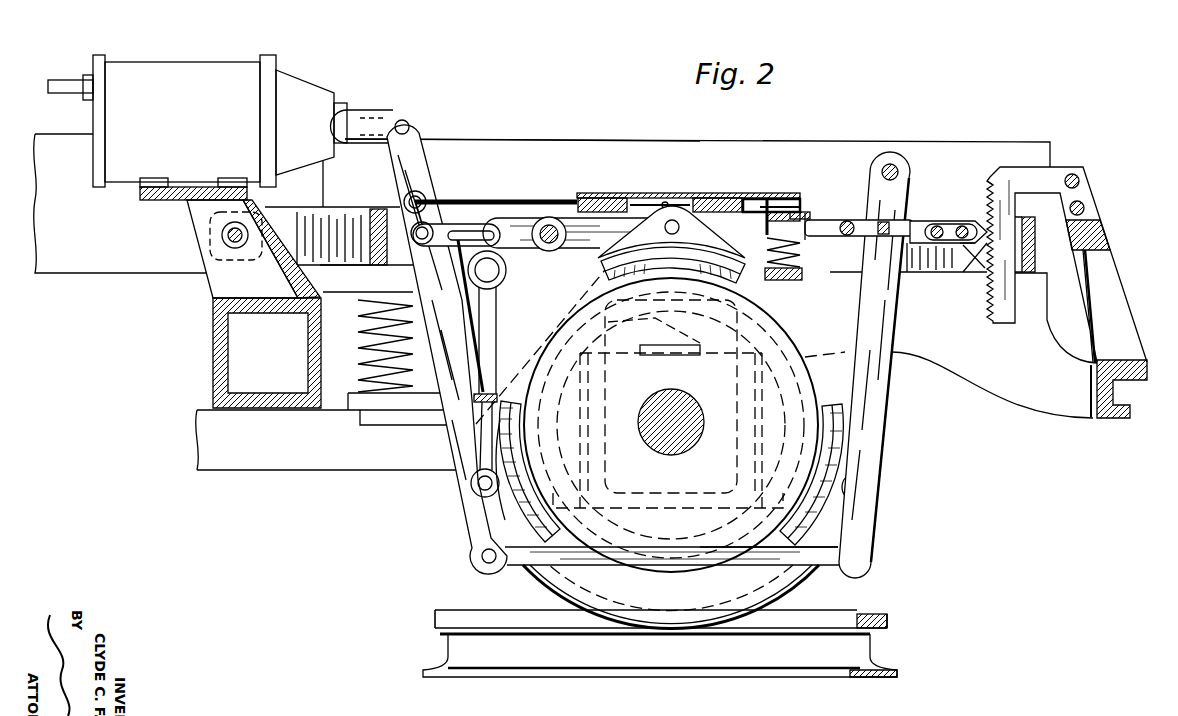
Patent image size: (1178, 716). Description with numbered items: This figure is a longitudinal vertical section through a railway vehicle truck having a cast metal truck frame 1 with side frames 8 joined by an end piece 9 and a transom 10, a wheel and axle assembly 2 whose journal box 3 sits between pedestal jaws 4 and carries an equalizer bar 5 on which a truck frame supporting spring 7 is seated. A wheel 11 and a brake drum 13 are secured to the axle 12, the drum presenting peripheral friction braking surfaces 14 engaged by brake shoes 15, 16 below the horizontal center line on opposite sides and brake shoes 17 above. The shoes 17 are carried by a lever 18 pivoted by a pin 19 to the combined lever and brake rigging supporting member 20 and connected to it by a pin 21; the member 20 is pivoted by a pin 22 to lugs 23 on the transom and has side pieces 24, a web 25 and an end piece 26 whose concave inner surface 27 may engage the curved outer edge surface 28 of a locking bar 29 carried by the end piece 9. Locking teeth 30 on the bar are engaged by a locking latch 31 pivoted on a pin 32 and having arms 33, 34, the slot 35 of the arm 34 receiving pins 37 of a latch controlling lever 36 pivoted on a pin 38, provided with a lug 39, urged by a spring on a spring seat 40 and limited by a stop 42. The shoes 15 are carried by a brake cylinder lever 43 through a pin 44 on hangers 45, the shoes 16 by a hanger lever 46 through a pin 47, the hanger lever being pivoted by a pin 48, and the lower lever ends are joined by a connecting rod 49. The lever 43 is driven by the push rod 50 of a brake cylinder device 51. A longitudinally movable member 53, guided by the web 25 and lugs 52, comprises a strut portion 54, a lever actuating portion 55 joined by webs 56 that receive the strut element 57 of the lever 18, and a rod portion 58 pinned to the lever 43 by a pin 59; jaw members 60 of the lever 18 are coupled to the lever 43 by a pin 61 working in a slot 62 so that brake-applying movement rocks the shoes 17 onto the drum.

The truck frame 1 is at (502, 142).
The wheel and axle assembly 2 is at (563, 563).
The axle journal box 3 is at (727, 362).
The pedestal jaws 4 is at (677, 460).
The equalizer bar 5 is at (312, 463).
The truck frame supporting spring 7 is at (363, 360).
The side frame 8 is at (630, 143).
The end piece 9 is at (1108, 418).
The transom 10 is at (215, 350).
The wheel 11 is at (797, 573).
The axle 12 is at (690, 397).
The brake drum 13 is at (675, 560).
The peripheral friction braking surface 14 is at (560, 327).
The brake shoe 15 is at (530, 497).
The brake shoe 16 is at (838, 448).
The brake shoe 17 is at (600, 277).
The lever 18 is at (523, 230).
The pin 19 is at (552, 221).
The combined lever and brake rigging supporting member 20 is at (342, 217).
The pin 21 is at (675, 223).
The pin 22 is at (222, 233).
The lugs 23 is at (222, 283).
The side pieces 24 is at (397, 262).
The web 25 is at (793, 210).
The end piece 26 is at (1035, 247).
The concave inner surface 27 is at (1070, 222).
The curved outer edge surface 28 is at (1020, 312).
The locking bar 29 is at (995, 320).
The locking teeth 30 is at (990, 316).
The locking latch 31 is at (985, 233).
The pin 32 is at (963, 226).
The arm 33 is at (982, 250).
The arm 34 is at (952, 225).
The slot 35 is at (935, 244).
The latch controlling lever 36 is at (828, 222).
The pins 37 is at (940, 226).
The pin 38 is at (842, 235).
The lug 39 is at (763, 207).
The spring seat 40 is at (783, 281).
The stop 42 is at (806, 216).
The brake cylinder lever 43 is at (428, 140).
The pin 44 is at (480, 485).
The hangers 45 is at (493, 390).
The hanger lever 46 is at (890, 165).
The pin 47 is at (862, 491).
The pin 48 is at (910, 157).
The connecting rod 49 is at (605, 567).
The push rod 50 is at (370, 112).
The brake cylinder device 51 is at (190, 73).
The lugs 52 is at (748, 203).
The longitudinally movable member 53 is at (623, 200).
The strut portion 54 is at (595, 195).
The lever actuating portion 55 is at (732, 200).
The webs 56 is at (650, 203).
The strut element 57 is at (666, 201).
The rod portion 58 is at (470, 197).
The pin 59 is at (410, 198).
The jaw members 60 is at (487, 220).
The pin 61 is at (422, 242).
The slot 62 is at (459, 246).